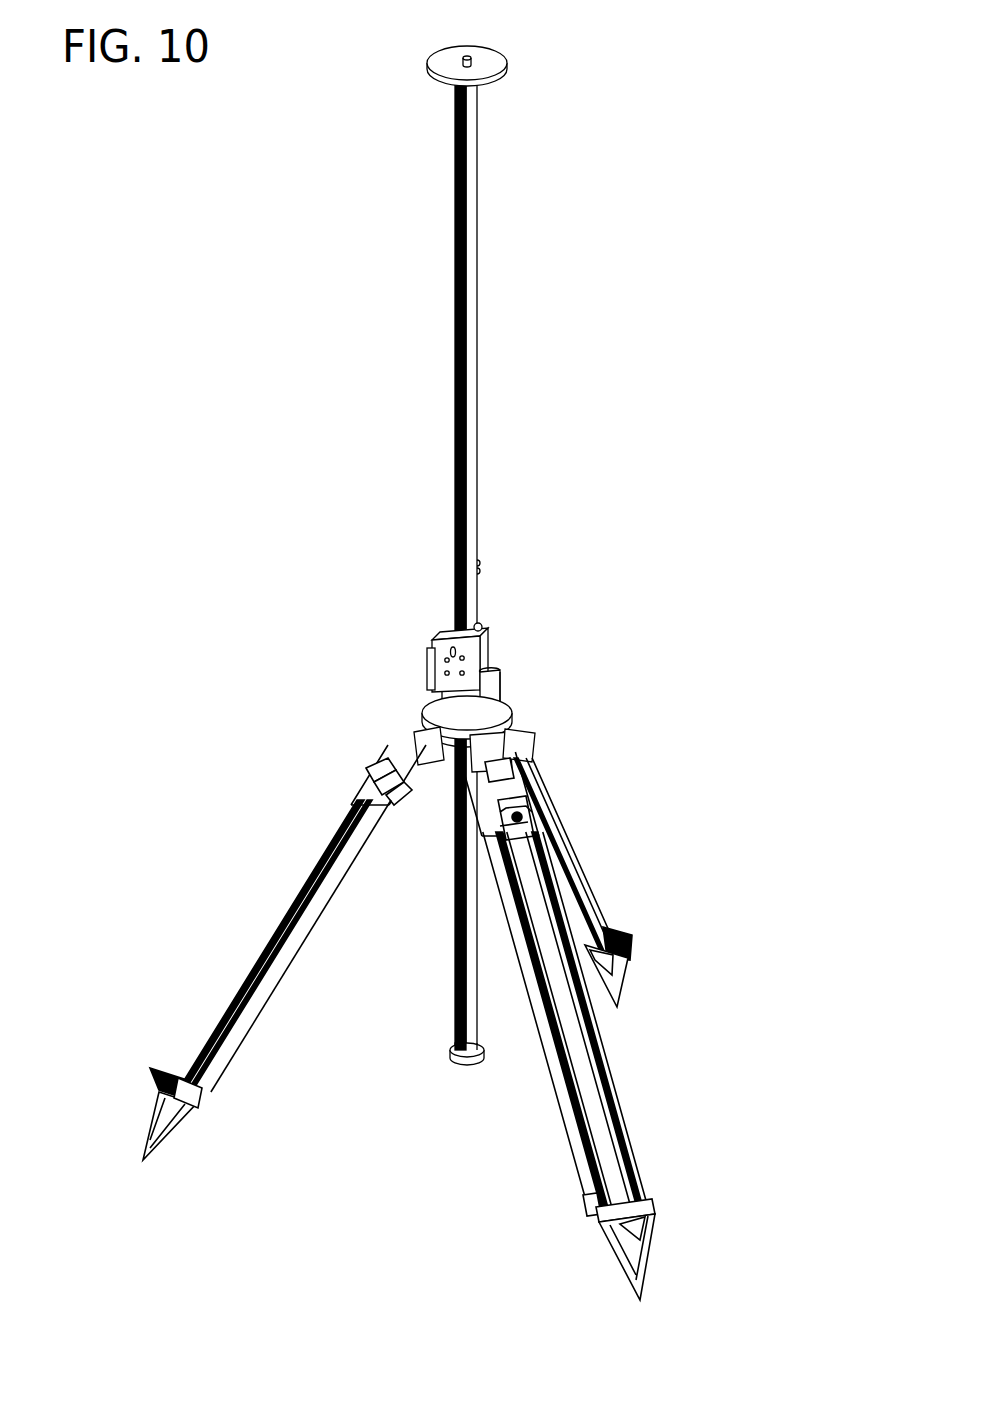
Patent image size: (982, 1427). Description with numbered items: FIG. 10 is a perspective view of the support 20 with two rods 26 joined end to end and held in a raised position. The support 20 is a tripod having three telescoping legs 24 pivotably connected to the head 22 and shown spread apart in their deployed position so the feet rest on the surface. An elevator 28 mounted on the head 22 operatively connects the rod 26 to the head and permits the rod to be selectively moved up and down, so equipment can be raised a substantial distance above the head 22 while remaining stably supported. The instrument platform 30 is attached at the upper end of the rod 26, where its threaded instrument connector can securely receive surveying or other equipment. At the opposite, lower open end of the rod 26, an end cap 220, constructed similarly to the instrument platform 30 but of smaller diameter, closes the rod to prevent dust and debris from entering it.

The support 20 is at (762, 86).
The head 22 is at (522, 702).
The telescoping legs 24 is at (596, 879).
The rod 26 is at (450, 181).
The elevator 28 is at (500, 650).
The instrument platform 30 is at (514, 58).
The end cap 220 is at (468, 1066).